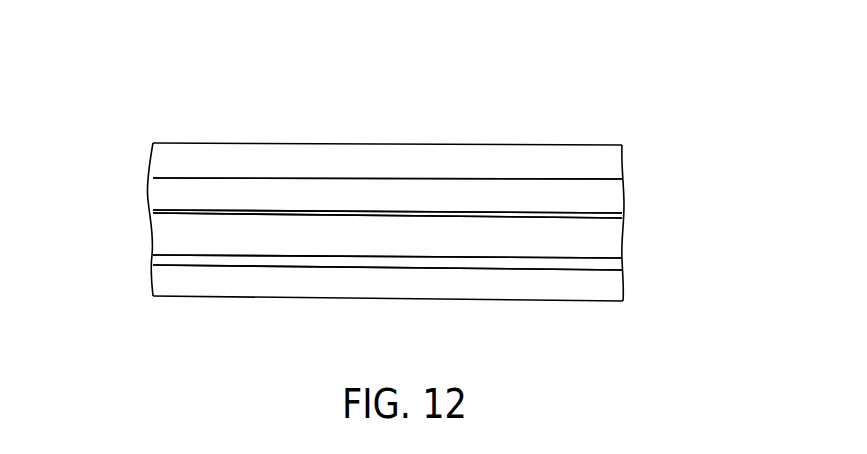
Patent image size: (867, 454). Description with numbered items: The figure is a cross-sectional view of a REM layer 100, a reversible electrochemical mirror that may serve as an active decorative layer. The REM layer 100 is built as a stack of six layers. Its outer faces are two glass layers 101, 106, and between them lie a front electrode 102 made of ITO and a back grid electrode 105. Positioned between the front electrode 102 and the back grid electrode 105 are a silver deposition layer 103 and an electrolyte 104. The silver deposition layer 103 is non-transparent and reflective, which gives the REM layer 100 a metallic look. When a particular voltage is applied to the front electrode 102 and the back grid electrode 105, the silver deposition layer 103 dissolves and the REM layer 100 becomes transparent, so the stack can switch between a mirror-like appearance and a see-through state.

The REM layer 100 is at (595, 108).
The glass layer 101 is at (169, 161).
The front electrode 102 is at (592, 196).
The silver deposition layer 103 is at (156, 212).
The electrolyte 104 is at (589, 234).
The back grid electrode 105 is at (157, 260).
The glass layer 106 is at (613, 288).